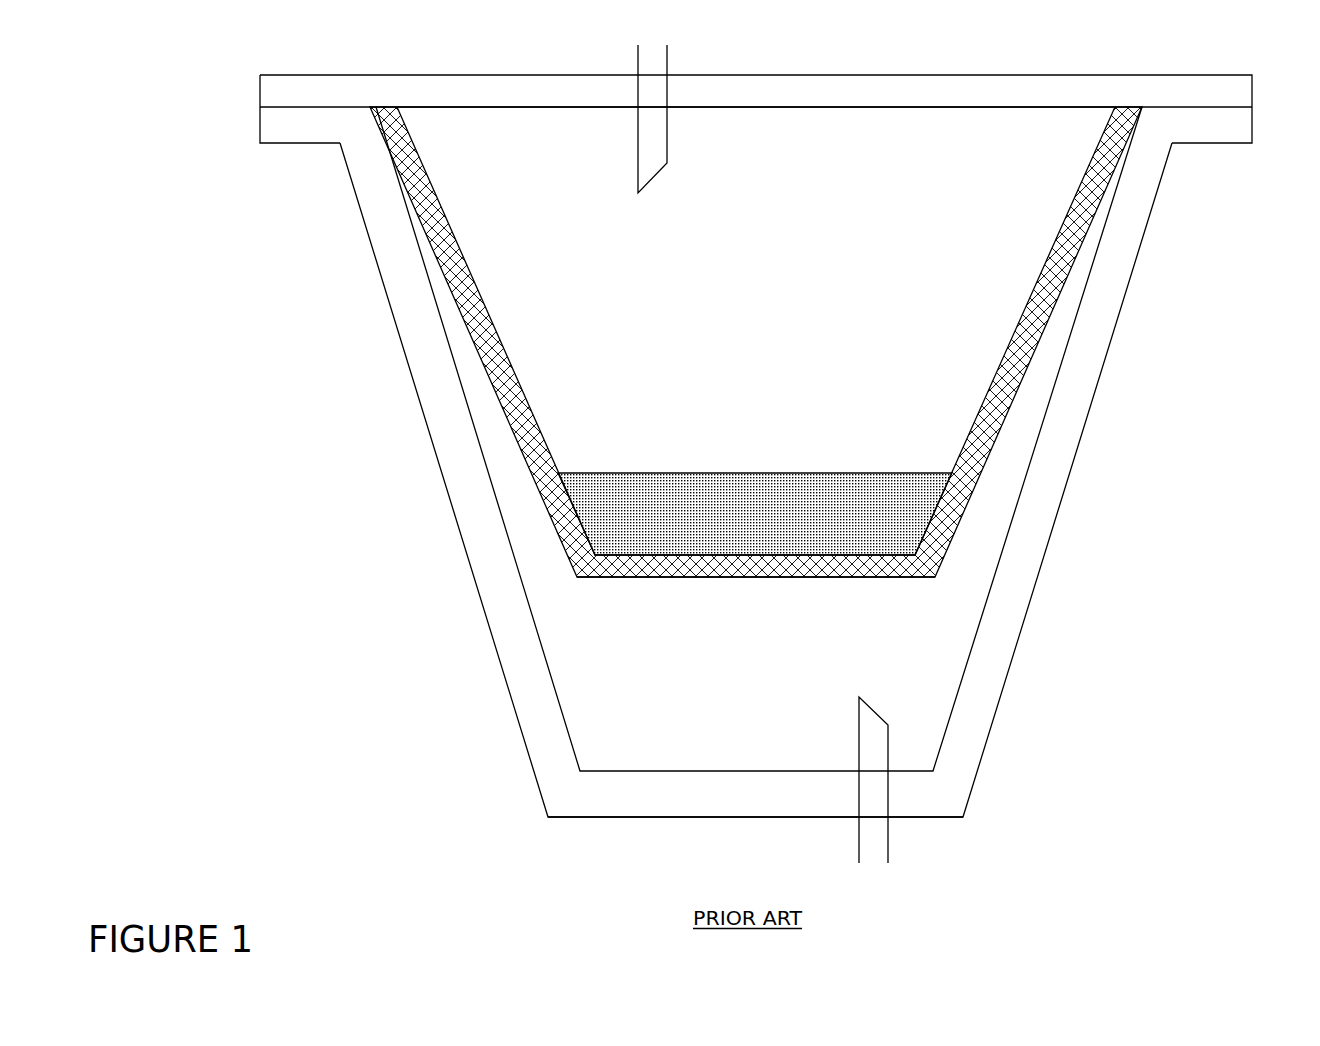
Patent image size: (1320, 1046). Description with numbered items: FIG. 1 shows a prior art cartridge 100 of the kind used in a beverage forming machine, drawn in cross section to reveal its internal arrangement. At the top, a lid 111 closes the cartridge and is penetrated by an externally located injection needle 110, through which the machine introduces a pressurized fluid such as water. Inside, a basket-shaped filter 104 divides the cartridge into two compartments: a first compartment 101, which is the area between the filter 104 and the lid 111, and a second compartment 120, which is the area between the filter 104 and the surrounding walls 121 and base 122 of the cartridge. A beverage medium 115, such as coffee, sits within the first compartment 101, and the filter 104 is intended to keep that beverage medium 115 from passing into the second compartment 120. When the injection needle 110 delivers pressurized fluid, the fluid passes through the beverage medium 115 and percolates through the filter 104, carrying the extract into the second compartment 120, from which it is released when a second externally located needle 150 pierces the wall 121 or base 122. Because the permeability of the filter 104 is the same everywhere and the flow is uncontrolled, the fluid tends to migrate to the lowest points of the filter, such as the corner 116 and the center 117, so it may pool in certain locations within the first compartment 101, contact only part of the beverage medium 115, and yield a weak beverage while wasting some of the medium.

The cartridge 100 is at (764, 854).
The first compartment 101 is at (857, 253).
The filter 104 is at (1040, 332).
The injection needle 110 is at (667, 163).
The lid 111 is at (1183, 90).
The beverage medium 115 is at (845, 520).
The corner 116 is at (935, 573).
The center 117 is at (773, 577).
The second compartment 120 is at (918, 660).
The wall 121 is at (425, 425).
The base 122 is at (625, 787).
The second externally located needle 150 is at (888, 843).